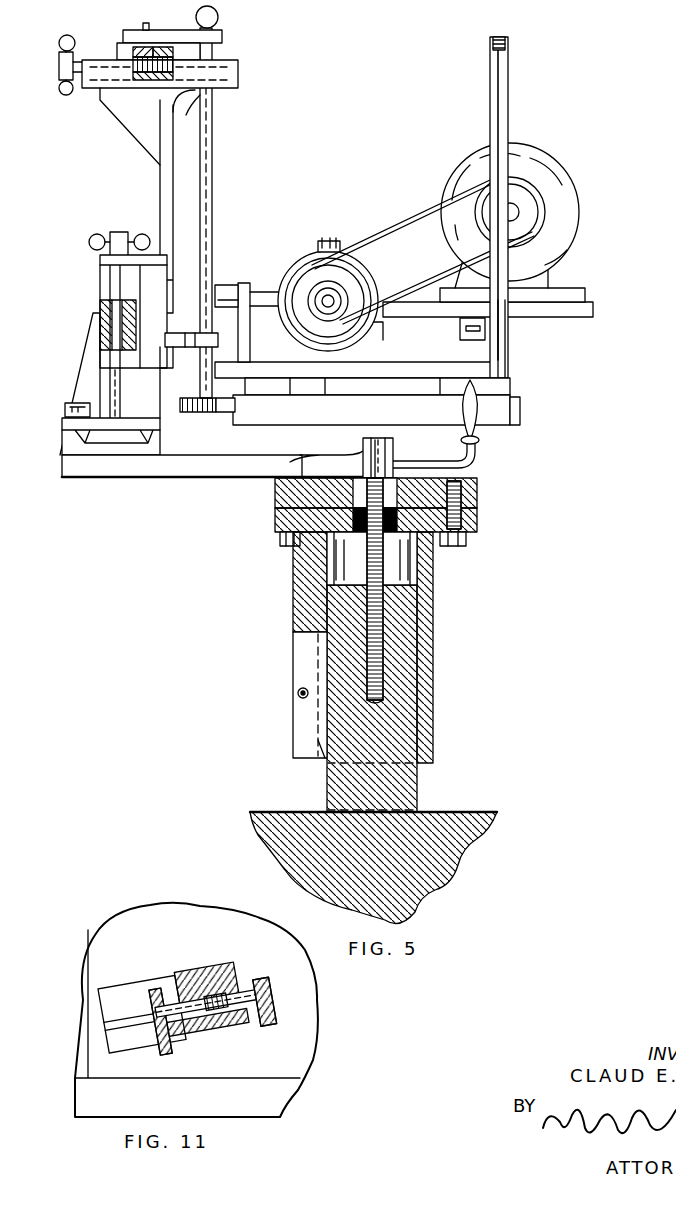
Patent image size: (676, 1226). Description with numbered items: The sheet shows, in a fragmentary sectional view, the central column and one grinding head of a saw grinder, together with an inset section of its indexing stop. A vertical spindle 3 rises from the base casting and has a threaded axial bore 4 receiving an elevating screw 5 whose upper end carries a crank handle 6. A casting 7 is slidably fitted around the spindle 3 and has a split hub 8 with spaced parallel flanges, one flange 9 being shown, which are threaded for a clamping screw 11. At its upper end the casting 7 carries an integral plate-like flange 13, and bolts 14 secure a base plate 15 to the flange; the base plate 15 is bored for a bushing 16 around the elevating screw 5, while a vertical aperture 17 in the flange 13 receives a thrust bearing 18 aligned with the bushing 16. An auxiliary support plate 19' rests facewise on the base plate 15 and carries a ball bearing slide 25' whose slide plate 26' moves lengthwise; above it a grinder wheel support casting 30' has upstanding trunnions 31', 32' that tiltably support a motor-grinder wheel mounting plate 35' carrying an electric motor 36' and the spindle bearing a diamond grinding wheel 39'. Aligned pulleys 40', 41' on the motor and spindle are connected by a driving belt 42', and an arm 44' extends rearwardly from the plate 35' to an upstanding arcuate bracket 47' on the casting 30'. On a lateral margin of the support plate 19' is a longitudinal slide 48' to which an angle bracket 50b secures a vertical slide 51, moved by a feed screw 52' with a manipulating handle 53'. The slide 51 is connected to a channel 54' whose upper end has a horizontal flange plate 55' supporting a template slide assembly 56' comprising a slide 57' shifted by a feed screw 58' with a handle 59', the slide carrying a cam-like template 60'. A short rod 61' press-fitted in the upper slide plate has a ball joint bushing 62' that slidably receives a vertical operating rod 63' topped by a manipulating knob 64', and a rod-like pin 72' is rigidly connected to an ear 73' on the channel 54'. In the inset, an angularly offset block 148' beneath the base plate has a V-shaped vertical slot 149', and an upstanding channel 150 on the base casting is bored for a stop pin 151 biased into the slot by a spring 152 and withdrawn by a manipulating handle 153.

In FIG. 5, the vertical spindle 3 is at (325, 790).
In FIG. 5, the threaded axial bore 4 is at (372, 678).
In FIG. 5, the elevating screw 5 is at (368, 549).
In FIG. 5, the crank handle 6 is at (486, 448).
In FIG. 5, the casting 7 is at (434, 642).
In FIG. 5, the split hub 8 is at (322, 754).
In FIG. 5, the flange 9 is at (300, 716).
In FIG. 5, the clamping screw 11 is at (298, 693).
In FIG. 5, the plate-like flange 13 is at (478, 520).
In FIG. 5, the bolts 14 is at (284, 546).
In FIG. 5, the base plate 15 is at (478, 496).
In FIG. 5, the bushing 16 is at (395, 476).
In FIG. 5, the vertical aperture 17 is at (412, 558).
In FIG. 5, the thrust bearing 18 is at (277, 517).
In FIG. 5, the auxiliary support plate 19' is at (221, 483).
In FIG. 5, the ball bearing slide 25' is at (279, 474).
In FIG. 5, the slide plate 26' is at (376, 414).
In FIG. 5, the grinder wheel support casting 30' is at (360, 330).
In FIG. 5, the trunnion 31' is at (247, 312).
In FIG. 5, the trunnion 32' is at (528, 339).
In FIG. 5, the motor-grinder wheel mounting plate 35' is at (488, 312).
In FIG. 5, the electric motor 36' is at (525, 209).
In FIG. 5, the diamond grinding wheel 39' is at (307, 292).
In FIG. 5, the pulley 40' is at (552, 212).
In FIG. 5, the pulley 41' is at (374, 342).
In FIG. 5, the driving belt 42' is at (423, 252).
In FIG. 5, the arm 44' is at (442, 340).
In FIG. 5, the upstanding arcuate bracket 47' is at (532, 207).
In FIG. 5, the longitudinal slide 48' is at (86, 446).
In FIG. 5, the angle bracket 50b is at (76, 368).
In FIG. 5, the vertical slide 51 is at (125, 369).
In FIG. 5, the feed screw 52' is at (102, 311).
In FIG. 5, the manipulating handle 53' is at (89, 244).
In FIG. 5, the channel 54' is at (140, 206).
In FIG. 5, the horizontal flange plate 55' is at (107, 126).
In FIG. 5, the template slide assembly 56' is at (190, 67).
In FIG. 5, the slide 57' is at (193, 48).
In FIG. 5, the feed screw 58' is at (222, 108).
In FIG. 5, the manipulating handle 59' is at (54, 58).
In FIG. 5, the cam-like template 60' is at (216, 28).
In FIG. 5, the short rod 61' is at (205, 426).
In FIG. 5, the ball joint bushing 62' is at (190, 417).
In FIG. 5, the vertical operating rod 63' is at (235, 213).
In FIG. 5, the manipulating knob 64' is at (237, 14).
In FIG. 5, the rod-like pin 72' is at (191, 318).
In FIG. 5, the ear 73' is at (177, 369).
In FIG. 11, the angularly offset block 148' is at (279, 992).
In FIG. 11, the V-shaped vertical slot 149' is at (212, 971).
In FIG. 11, the upstanding channel 150 is at (152, 972).
In FIG. 11, the stop pin 151 is at (228, 1030).
In FIG. 11, the spring 152 is at (198, 990).
In FIG. 11, the manipulating handle 153 is at (168, 1055).